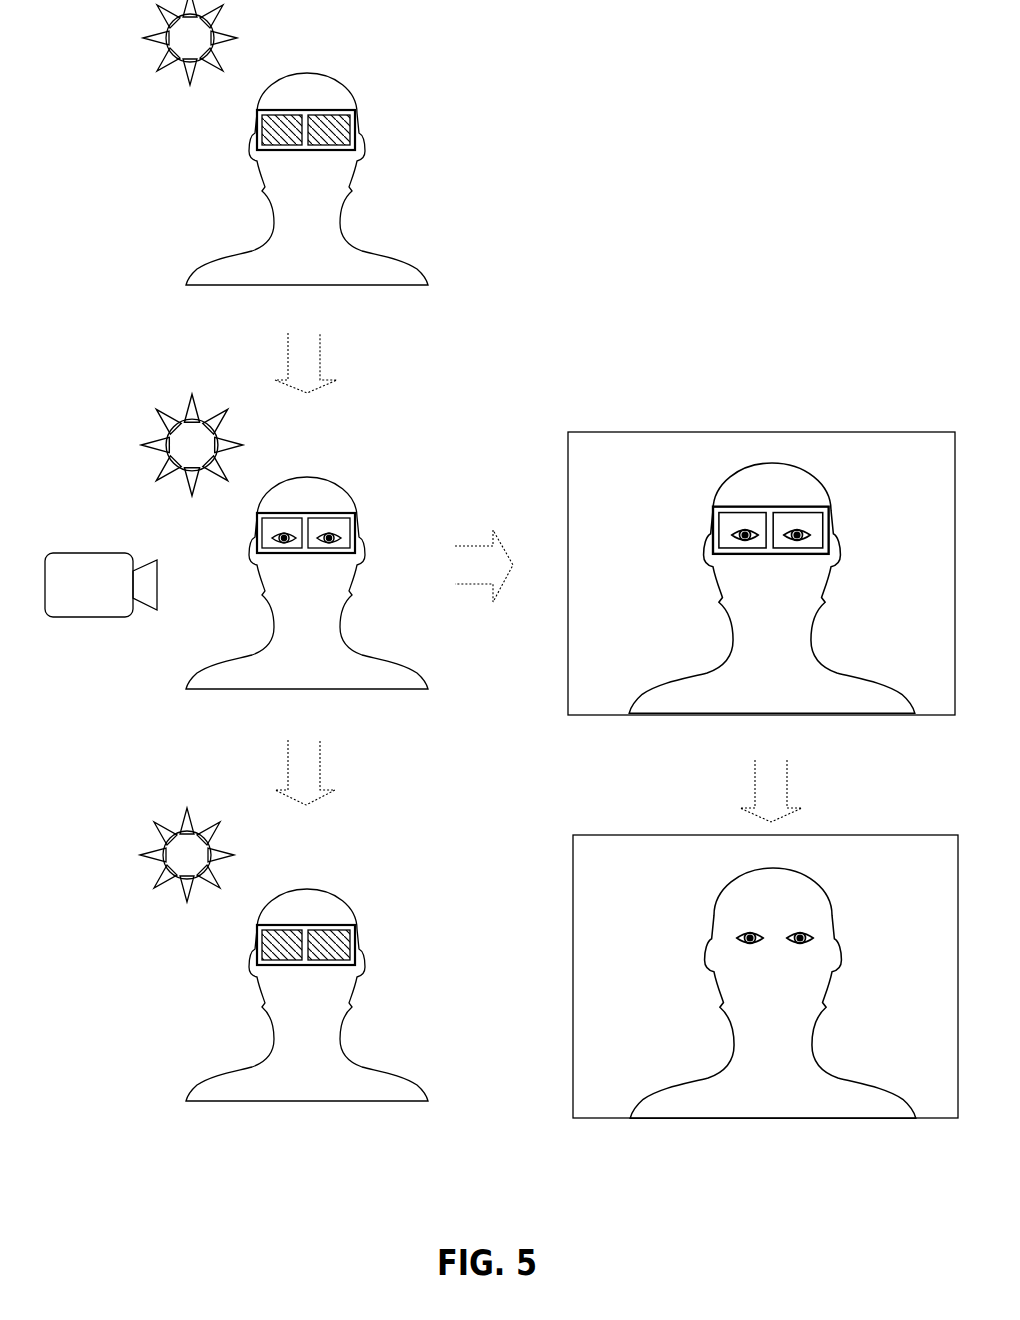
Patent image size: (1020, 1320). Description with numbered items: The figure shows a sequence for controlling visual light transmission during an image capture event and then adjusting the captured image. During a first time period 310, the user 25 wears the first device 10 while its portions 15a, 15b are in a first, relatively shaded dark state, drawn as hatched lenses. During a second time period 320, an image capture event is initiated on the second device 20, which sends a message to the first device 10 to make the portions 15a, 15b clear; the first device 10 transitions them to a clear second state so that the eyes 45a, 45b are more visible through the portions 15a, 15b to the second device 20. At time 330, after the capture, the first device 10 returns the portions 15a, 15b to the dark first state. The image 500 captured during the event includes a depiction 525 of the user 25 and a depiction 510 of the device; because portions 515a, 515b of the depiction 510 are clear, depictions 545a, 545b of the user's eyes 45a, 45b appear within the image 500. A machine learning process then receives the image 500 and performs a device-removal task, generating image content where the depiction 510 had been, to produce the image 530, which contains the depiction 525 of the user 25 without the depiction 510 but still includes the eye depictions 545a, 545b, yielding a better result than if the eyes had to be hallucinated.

The first device 10 is at (337, 110).
The first portion 15a is at (257, 128).
The second portion 15b is at (357, 128).
The second device 20 is at (90, 553).
The user 25 is at (352, 244).
The first eye 45a is at (281, 529).
The second eye 45b is at (327, 529).
The first time period 310 is at (104, 94).
The second time period 320 is at (104, 408).
The time following image capture 330 is at (104, 824).
The image 500 is at (761, 573).
The depiction of the device 510 is at (808, 508).
The first portion of the depiction of the device 515a is at (716, 530).
The second portion of the depiction of the device 515b is at (830, 530).
The depiction of the user 525 is at (822, 660).
The image 530 is at (765, 976).
The depiction of the first eye 545a is at (741, 527).
The depiction of the second eye 545b is at (795, 527).